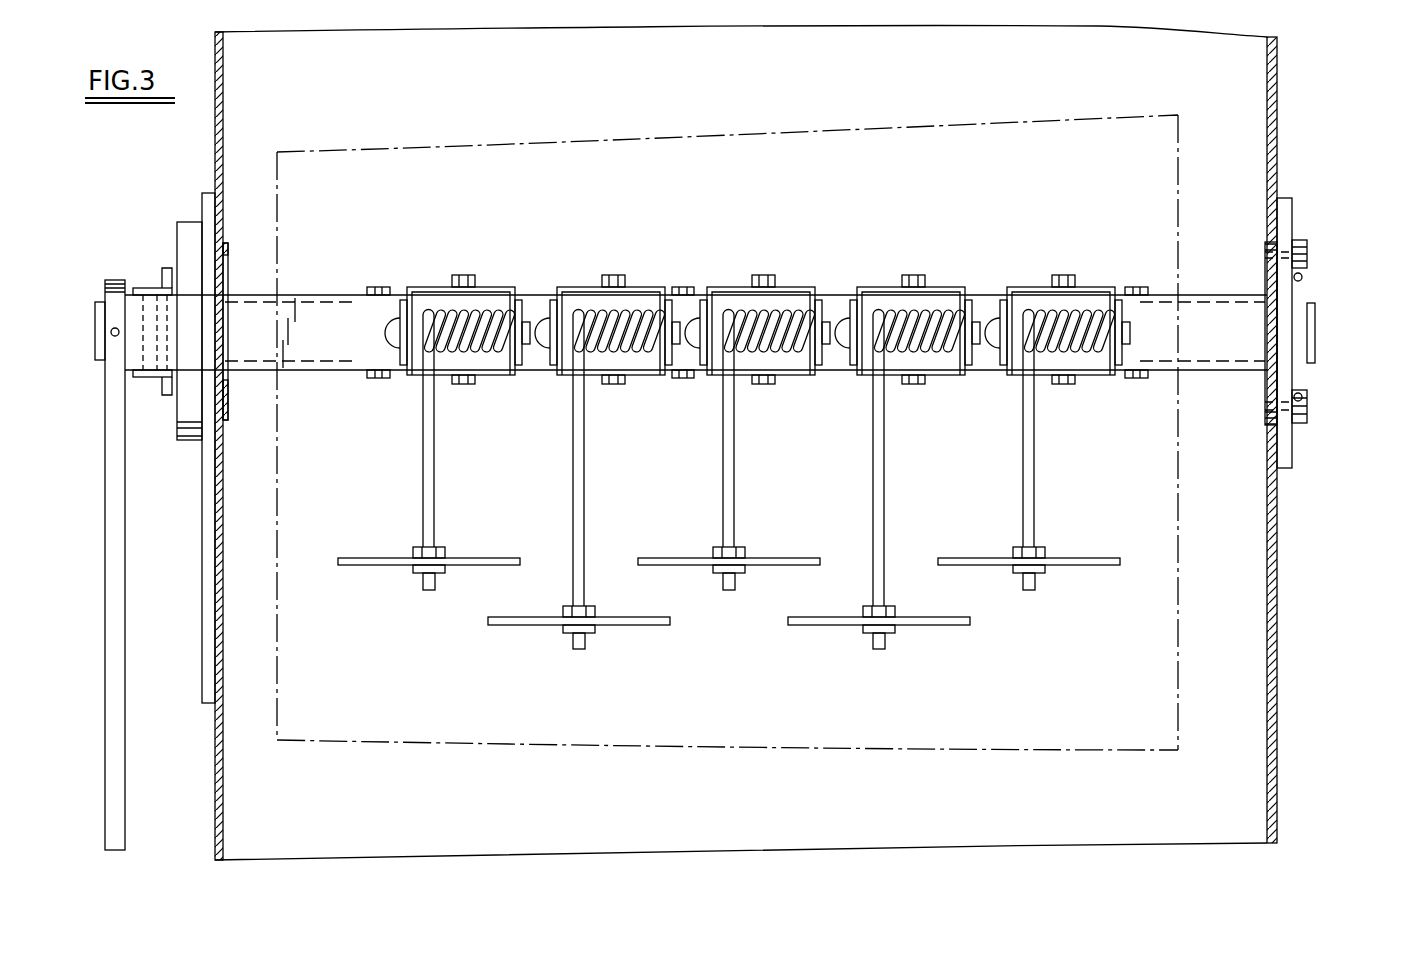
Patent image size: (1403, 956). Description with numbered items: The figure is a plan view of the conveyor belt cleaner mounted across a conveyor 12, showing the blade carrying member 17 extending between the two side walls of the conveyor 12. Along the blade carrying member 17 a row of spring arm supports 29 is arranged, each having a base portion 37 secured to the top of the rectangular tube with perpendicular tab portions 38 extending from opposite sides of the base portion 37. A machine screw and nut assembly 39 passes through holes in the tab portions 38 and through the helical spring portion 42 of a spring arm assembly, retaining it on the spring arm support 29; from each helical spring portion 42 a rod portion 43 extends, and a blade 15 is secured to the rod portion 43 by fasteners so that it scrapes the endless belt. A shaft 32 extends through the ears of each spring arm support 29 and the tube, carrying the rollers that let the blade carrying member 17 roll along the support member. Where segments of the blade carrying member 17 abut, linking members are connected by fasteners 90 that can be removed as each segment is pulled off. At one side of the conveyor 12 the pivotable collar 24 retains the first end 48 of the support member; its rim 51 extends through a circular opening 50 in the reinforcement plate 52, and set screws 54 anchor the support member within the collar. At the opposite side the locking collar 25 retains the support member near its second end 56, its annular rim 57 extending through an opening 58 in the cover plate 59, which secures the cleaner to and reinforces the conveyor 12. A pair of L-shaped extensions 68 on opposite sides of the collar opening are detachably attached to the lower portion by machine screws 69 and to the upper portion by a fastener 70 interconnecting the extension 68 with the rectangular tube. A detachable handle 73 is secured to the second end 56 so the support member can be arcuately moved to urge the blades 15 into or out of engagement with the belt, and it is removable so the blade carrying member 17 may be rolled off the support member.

The conveyor 12 is at (1285, 135).
The blade 15 is at (647, 620).
The blade carrying member 17 is at (990, 374).
The pivotable collar 24 is at (1308, 252).
The locking collar 25 is at (185, 222).
The spring arm support 29 is at (885, 305).
The shaft 32 is at (1062, 290).
The base portion 37 is at (643, 366).
The tab portions 38 is at (400, 303).
The machine screw and nut assembly 39 is at (553, 320).
The helical spring portion 42 is at (487, 355).
The rod portion 43 is at (436, 482).
The first end 48 is at (1318, 348).
The circular opening 50 is at (1265, 392).
The rim 51 is at (1265, 420).
The reinforcement plate 52 is at (1290, 445).
The set screws 54 is at (116, 337).
The second end 56 is at (95, 312).
The annular rim 57 is at (229, 255).
The opening 58 is at (228, 245).
The cover plate 59 is at (205, 560).
The L-shaped extensions 68 is at (175, 405).
The machine screws 69 is at (165, 385).
The fastener 70 is at (155, 285).
The detachable handle 73 is at (120, 668).
The fasteners 90 is at (688, 290).